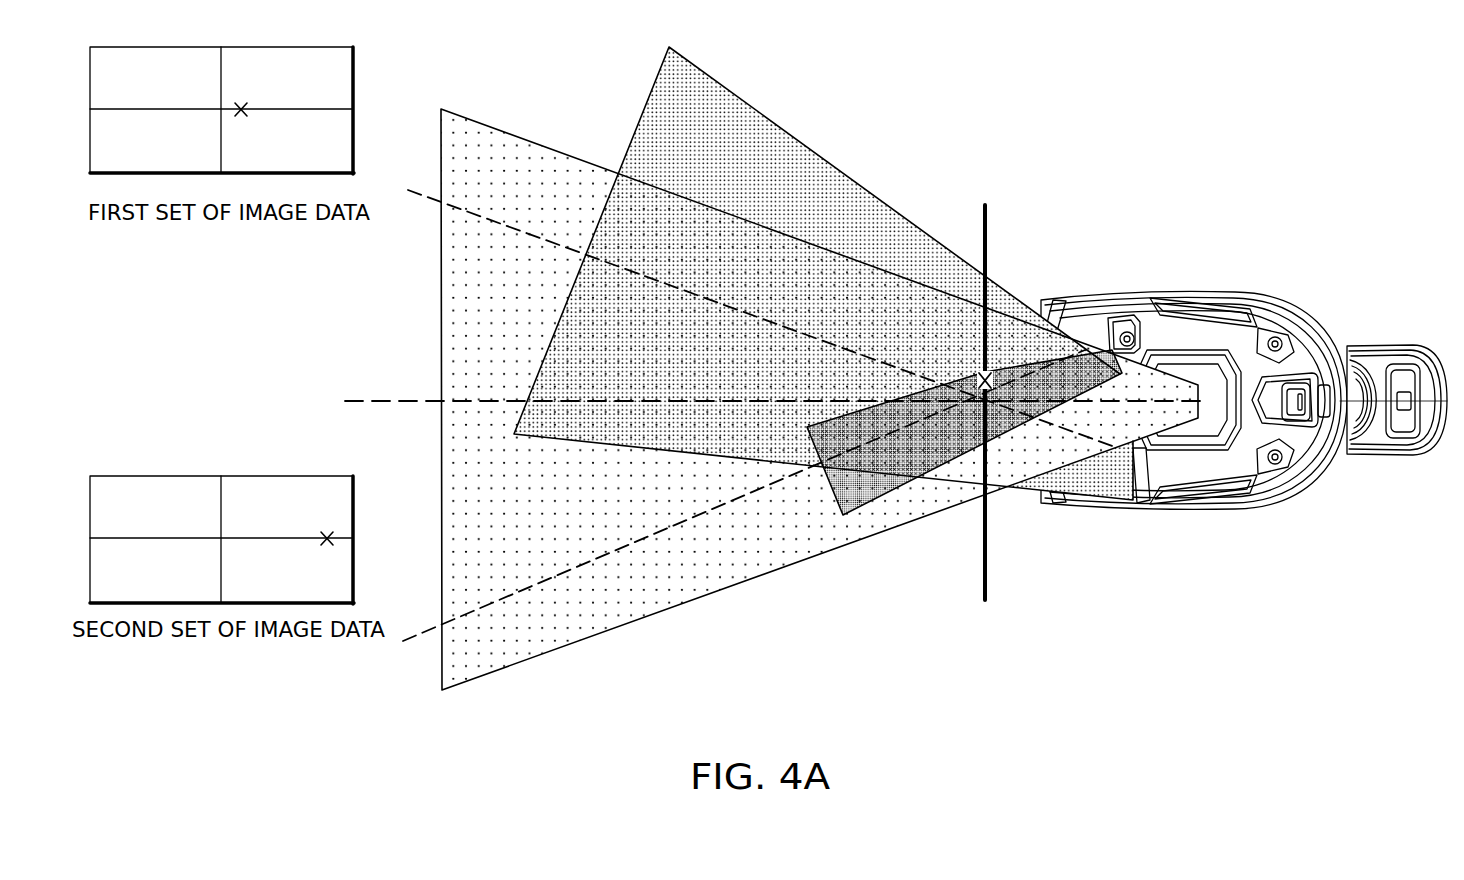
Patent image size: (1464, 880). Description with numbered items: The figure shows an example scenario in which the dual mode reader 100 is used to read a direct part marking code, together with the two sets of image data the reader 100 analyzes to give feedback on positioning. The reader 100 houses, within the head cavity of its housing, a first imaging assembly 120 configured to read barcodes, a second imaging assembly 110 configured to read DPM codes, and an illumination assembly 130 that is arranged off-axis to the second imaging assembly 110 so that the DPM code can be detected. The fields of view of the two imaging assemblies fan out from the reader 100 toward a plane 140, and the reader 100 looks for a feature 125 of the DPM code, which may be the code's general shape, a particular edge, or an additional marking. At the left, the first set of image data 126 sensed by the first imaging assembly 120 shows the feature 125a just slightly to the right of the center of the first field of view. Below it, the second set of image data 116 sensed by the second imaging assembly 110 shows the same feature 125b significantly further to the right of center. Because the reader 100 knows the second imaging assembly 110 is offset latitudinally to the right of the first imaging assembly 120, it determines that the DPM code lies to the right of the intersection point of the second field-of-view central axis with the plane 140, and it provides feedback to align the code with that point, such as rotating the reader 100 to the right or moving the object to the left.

The dual mode reader 100 is at (1236, 294).
The second imaging assembly 110 is at (1109, 330).
The second set of image data 116 is at (238, 465).
The first imaging assembly 120 is at (1197, 420).
The feature 125 is at (988, 370).
The feature 125a is at (244, 104).
The feature 125b is at (322, 533).
The first set of image data 126 is at (241, 38).
The illumination assembly 130 is at (1141, 505).
The plane 140 is at (981, 231).